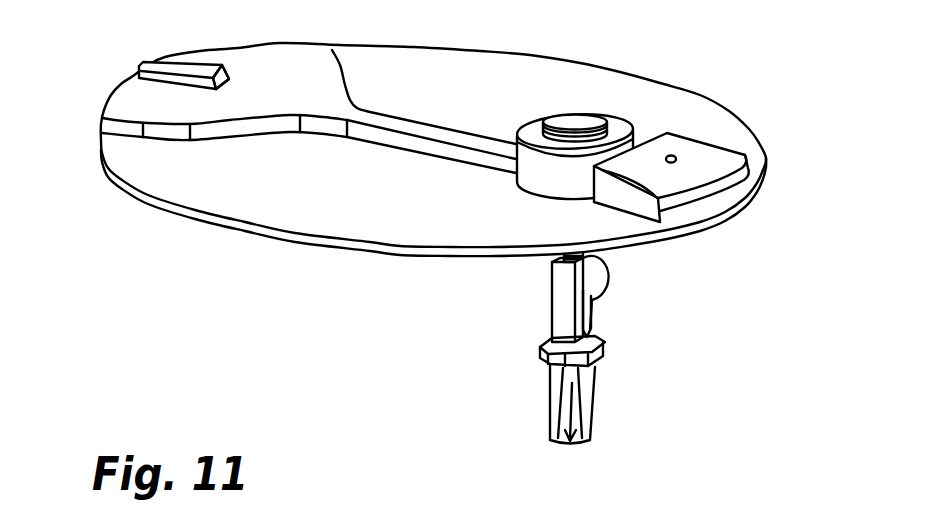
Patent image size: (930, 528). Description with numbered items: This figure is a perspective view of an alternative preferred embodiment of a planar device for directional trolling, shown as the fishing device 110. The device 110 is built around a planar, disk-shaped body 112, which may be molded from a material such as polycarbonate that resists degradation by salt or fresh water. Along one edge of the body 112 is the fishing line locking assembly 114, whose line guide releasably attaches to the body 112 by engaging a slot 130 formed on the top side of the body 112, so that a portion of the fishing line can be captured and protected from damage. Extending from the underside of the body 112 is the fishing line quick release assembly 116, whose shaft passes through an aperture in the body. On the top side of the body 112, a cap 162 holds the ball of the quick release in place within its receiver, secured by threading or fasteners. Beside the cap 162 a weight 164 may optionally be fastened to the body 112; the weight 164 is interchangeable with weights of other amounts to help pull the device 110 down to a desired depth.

The fishing device 110 is at (169, 240).
The body 112 is at (376, 219).
The fishing line locking assembly 114 is at (121, 73).
The fishing line quick release assembly 116 is at (631, 343).
The slot 130 is at (237, 83).
The cap 162 is at (617, 133).
The weight 164 is at (710, 170).